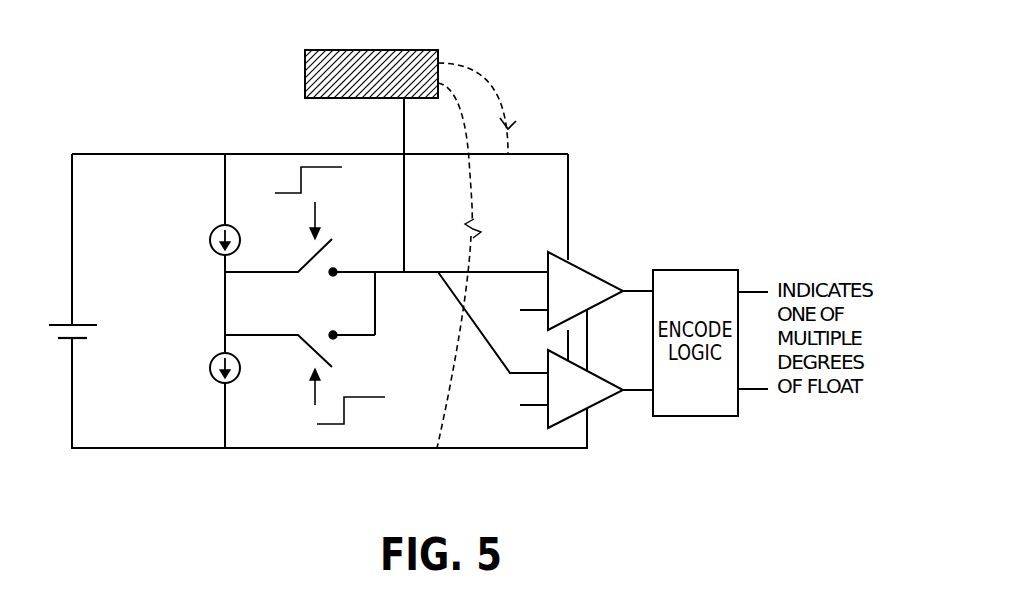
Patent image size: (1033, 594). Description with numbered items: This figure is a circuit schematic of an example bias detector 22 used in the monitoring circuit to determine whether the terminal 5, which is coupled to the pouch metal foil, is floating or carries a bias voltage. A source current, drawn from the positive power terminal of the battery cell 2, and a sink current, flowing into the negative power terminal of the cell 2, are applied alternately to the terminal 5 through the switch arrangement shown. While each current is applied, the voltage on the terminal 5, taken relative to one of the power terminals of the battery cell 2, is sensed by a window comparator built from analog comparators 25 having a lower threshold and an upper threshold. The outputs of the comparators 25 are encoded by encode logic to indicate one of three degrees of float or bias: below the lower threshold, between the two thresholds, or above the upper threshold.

The battery cell 2 is at (48, 335).
The terminal 5 is at (439, 50).
The bias detector 22 is at (297, 362).
The analog comparators 25 is at (597, 298).